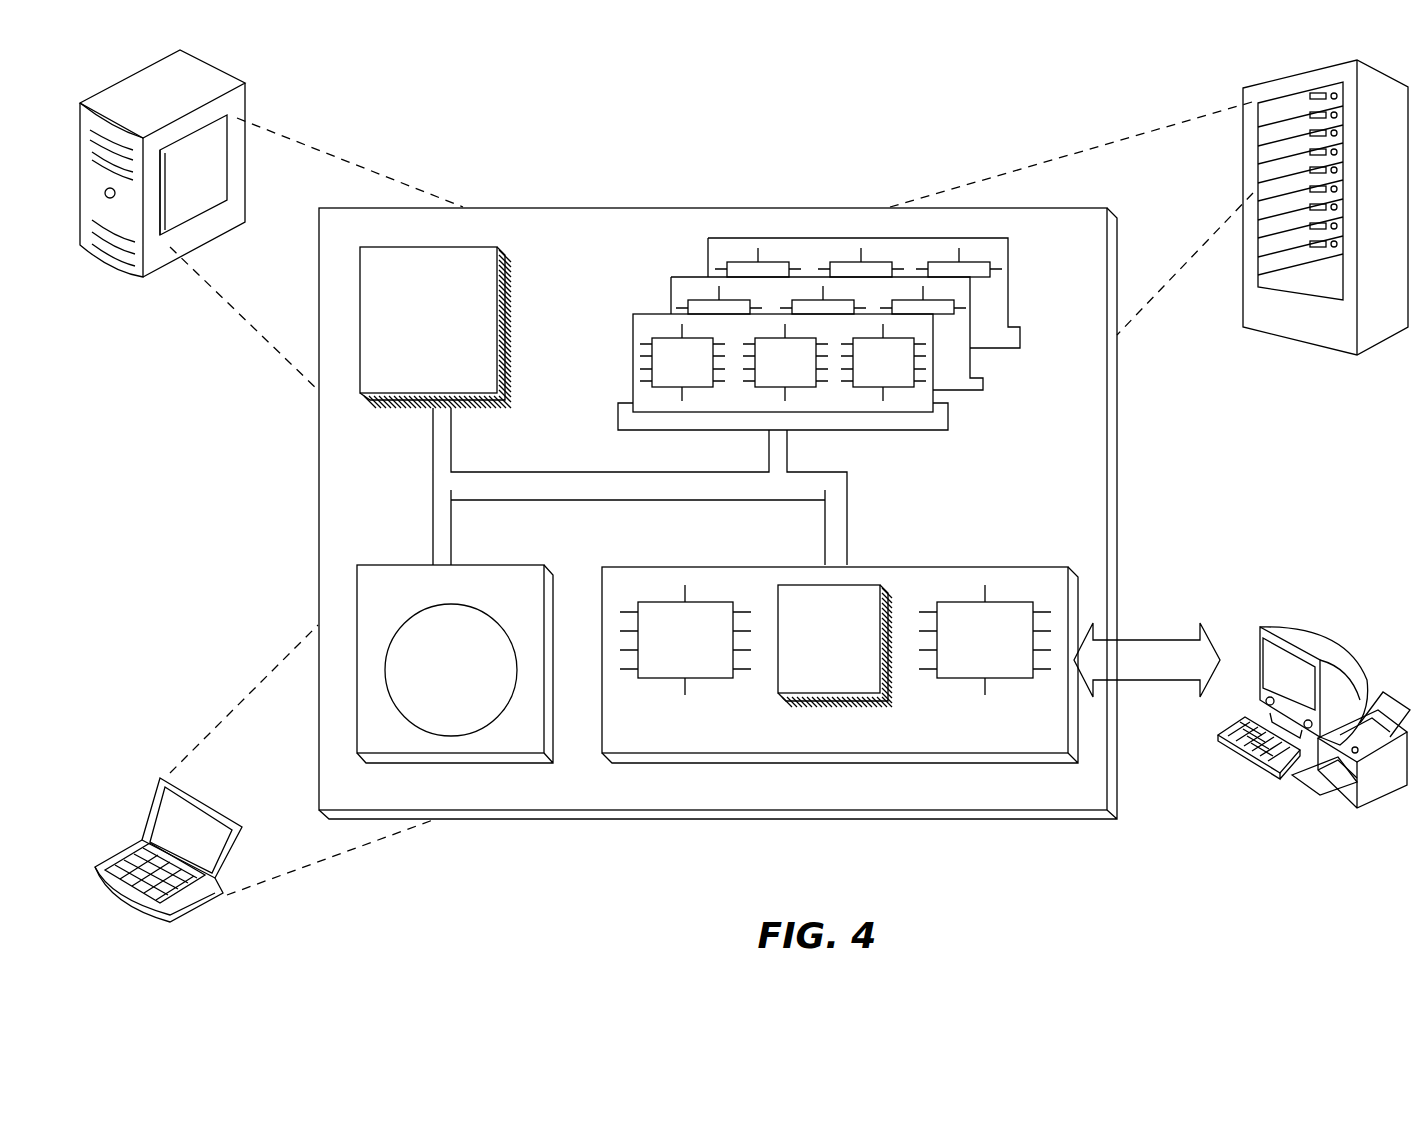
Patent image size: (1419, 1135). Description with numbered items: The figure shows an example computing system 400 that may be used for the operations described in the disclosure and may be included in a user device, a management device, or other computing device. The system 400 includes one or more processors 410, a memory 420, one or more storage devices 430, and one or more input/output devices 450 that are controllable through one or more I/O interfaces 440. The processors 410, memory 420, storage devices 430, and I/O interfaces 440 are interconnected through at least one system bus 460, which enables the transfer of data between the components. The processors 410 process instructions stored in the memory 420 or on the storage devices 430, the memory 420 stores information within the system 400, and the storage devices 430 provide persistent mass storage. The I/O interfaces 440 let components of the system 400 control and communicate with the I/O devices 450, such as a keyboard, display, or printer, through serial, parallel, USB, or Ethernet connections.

The computing system 400 is at (530, 127).
The processor 410 is at (488, 384).
The memory 420 is at (1017, 390).
The storage device 430 is at (535, 745).
The I/O interface 440 is at (953, 742).
The I/O device 450 is at (1260, 627).
The system bus 460 is at (633, 490).